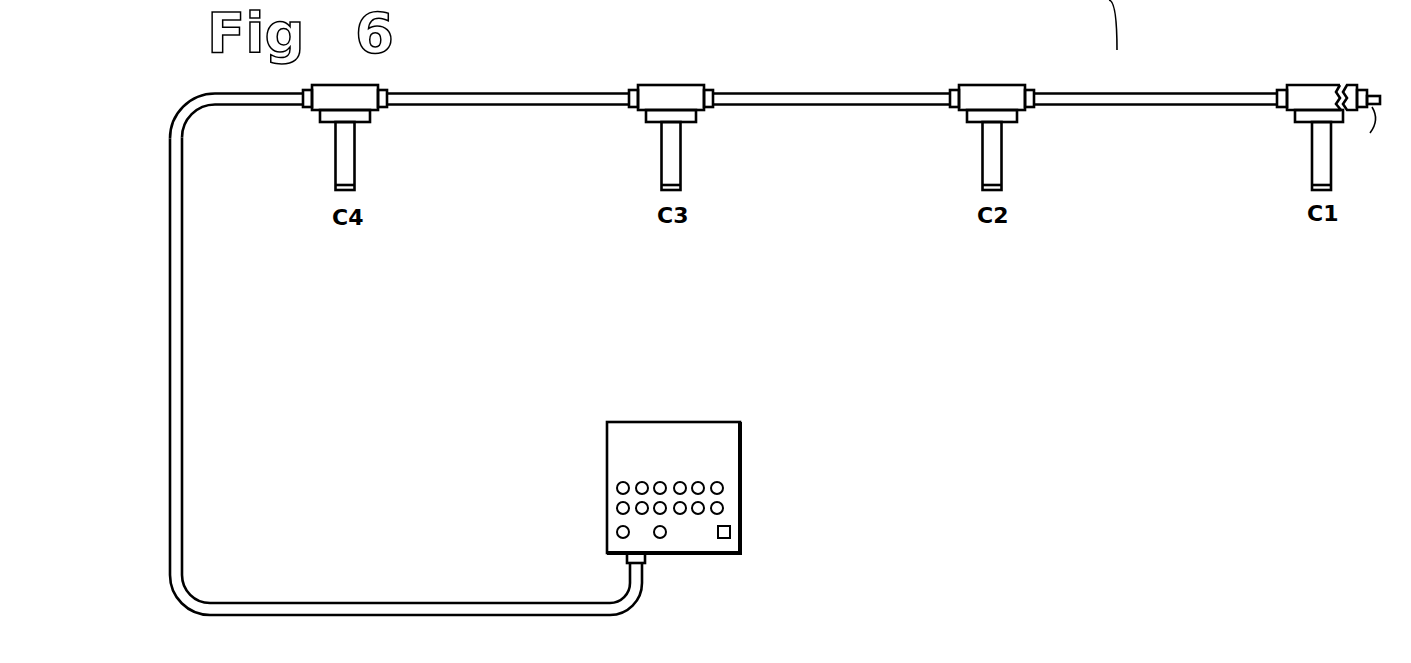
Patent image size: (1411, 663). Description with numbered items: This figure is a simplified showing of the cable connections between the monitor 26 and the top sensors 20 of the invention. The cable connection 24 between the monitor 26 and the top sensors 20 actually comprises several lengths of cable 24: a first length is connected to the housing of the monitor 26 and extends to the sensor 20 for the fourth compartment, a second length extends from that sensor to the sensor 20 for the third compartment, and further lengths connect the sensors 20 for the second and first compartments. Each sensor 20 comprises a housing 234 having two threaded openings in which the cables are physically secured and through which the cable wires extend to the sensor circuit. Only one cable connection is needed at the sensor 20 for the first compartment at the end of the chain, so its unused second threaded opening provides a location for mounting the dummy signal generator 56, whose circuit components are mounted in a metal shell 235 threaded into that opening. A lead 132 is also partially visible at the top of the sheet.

The top sensor 20 is at (336, 162).
The cable connection 24 is at (521, 93).
The monitor 26 is at (726, 422).
The dummy signal generator 56 is at (1384, 90).
The housing 234 is at (1352, 88).
The metal shell 235 is at (1363, 134).
The lead 132 is at (1150, 25).